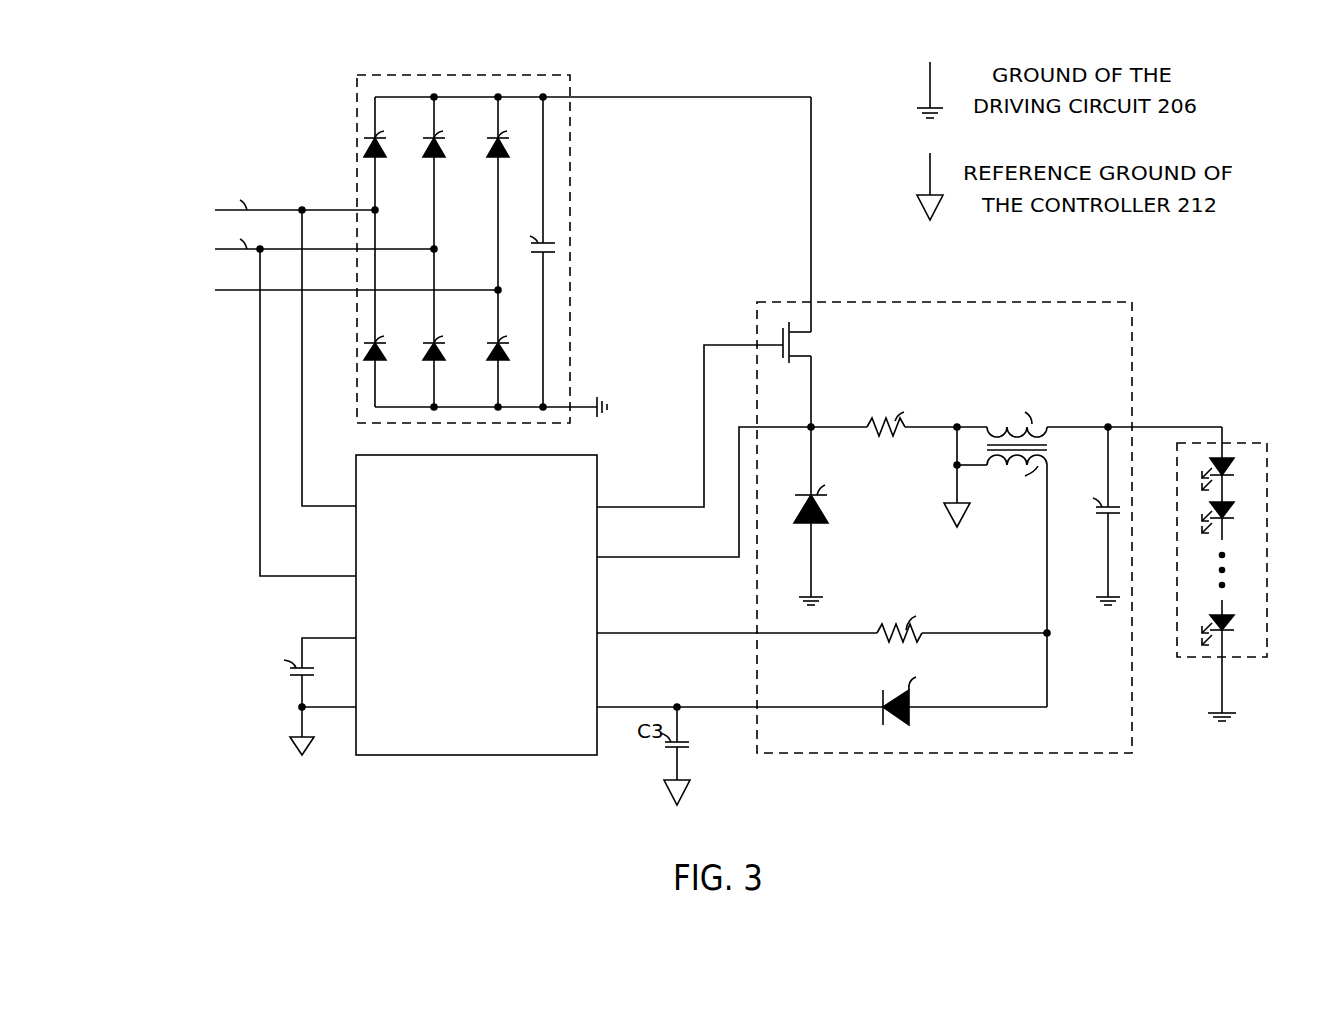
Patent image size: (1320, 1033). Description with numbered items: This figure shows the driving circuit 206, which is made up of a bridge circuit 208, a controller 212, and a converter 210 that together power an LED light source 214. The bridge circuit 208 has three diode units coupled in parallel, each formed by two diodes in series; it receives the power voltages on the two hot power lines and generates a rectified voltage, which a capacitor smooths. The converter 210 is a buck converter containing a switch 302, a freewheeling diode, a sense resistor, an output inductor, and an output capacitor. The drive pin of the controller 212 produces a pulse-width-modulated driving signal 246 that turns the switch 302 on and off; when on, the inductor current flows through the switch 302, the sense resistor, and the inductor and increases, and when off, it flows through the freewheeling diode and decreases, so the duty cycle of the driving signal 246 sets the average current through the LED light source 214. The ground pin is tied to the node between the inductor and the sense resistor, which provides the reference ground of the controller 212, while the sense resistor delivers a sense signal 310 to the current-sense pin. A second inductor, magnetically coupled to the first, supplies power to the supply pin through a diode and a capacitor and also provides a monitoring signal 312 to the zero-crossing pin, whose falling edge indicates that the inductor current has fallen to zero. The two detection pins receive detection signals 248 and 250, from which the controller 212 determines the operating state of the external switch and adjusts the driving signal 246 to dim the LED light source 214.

The driving circuit 206 is at (200, 109).
The bridge circuit 208 is at (570, 180).
The converter 210 is at (1132, 340).
The controller 212 is at (446, 757).
The LED light source 214 is at (1267, 540).
The driving signal 246 is at (661, 507).
The detection signal 248 is at (302, 452).
The detection signal 250 is at (260, 452).
The switch 302 is at (804, 356).
The sense signal 310 is at (661, 557).
The monitoring signal 312 is at (661, 633).